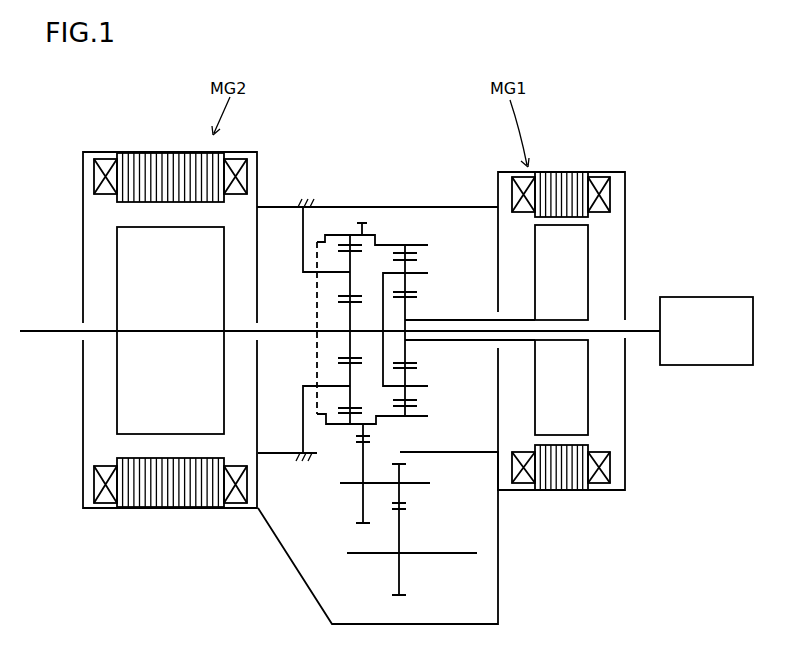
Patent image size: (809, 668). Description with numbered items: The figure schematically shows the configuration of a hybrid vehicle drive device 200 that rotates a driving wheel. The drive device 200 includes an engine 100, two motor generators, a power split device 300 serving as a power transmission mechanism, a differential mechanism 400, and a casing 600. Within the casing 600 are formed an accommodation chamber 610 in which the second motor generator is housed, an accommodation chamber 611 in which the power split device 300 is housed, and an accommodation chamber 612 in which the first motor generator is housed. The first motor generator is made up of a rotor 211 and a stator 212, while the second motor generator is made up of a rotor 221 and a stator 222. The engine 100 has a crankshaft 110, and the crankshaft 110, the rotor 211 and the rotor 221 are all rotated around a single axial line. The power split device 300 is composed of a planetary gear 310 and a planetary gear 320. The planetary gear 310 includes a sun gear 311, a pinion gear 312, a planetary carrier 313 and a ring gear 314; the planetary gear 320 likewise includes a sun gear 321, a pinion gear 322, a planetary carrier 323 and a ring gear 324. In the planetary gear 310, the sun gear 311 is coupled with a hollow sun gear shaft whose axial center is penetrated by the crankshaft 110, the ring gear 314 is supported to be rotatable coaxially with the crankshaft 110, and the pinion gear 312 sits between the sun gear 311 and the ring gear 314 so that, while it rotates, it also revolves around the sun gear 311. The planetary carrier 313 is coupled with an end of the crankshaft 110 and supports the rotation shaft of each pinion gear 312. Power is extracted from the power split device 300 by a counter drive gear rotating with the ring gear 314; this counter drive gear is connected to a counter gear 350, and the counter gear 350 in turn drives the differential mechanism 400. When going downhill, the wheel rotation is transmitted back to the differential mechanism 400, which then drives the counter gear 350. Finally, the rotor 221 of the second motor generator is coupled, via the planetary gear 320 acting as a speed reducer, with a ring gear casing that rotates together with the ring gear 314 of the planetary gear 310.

The engine 100 is at (737, 296).
The crankshaft 110 is at (640, 334).
The drive device 200 is at (440, 103).
The rotor 211 is at (588, 238).
The stator 212 is at (560, 170).
The rotor 221 is at (117, 252).
The stator 222 is at (125, 152).
The power split device 300 is at (427, 158).
The planetary gear 310 is at (427, 212).
The sun gear 311 is at (407, 312).
The pinion gear 312 is at (407, 266).
The planetary carrier 313 is at (428, 281).
The ring gear 314 is at (405, 248).
The planetary gear 320 is at (373, 212).
The sun gear 321 is at (350, 315).
The pinion gear 322 is at (350, 277).
The planetary carrier 323 is at (302, 263).
The ring gear 324 is at (324, 240).
The counter gear 350 is at (350, 495).
The differential mechanism 400 is at (397, 537).
The casing 600 is at (82, 200).
The accommodation chamber 610 is at (102, 391).
The accommodation chamber 611 is at (481, 435).
The accommodation chamber 612 is at (606, 425).